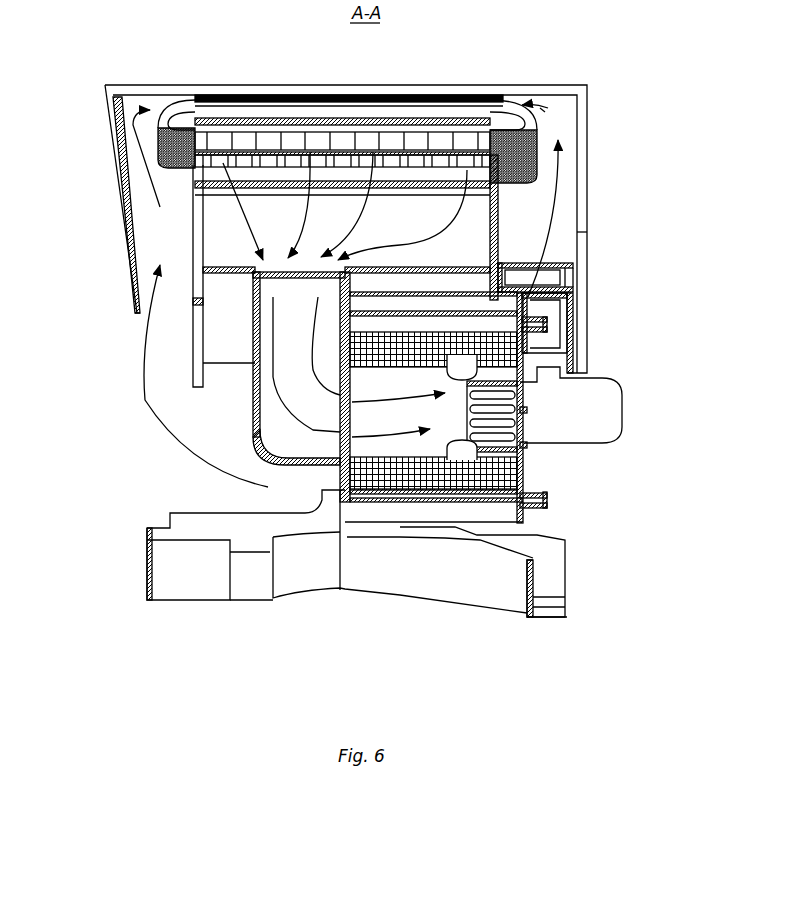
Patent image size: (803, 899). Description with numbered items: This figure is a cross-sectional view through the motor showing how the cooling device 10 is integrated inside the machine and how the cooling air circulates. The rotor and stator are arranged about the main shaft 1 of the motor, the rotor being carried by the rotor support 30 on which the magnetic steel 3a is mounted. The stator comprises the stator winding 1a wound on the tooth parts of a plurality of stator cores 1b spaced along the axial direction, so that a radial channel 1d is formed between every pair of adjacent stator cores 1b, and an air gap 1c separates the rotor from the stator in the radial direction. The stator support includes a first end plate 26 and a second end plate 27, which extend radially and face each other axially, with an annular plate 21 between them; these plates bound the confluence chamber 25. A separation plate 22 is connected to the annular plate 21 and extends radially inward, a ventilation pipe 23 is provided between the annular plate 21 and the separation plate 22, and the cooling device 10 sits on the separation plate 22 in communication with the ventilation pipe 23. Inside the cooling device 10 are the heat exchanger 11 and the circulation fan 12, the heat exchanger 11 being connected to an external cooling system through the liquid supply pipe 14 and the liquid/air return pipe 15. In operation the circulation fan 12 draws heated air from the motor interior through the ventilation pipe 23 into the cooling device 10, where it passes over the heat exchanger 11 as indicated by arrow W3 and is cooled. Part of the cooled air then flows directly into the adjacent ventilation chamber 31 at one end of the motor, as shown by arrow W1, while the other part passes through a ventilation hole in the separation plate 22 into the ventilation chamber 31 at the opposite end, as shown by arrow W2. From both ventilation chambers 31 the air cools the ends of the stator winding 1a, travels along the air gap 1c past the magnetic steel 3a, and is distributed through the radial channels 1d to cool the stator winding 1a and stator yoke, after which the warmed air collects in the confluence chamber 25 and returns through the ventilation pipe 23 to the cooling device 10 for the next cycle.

The main shaft 1 is at (310, 577).
The stator winding 1a is at (410, 117).
The stator cores 1b is at (473, 143).
The air gap 1c is at (262, 165).
The radial channel 1d is at (282, 152).
The magnetic steel 3a is at (210, 96).
The cooling device 10 is at (341, 461).
The heat exchanger 11 is at (522, 482).
The circulation fan 12 is at (587, 397).
The liquid supply pipe 14 is at (547, 503).
The liquid/air return pipe 15 is at (547, 325).
The annular plate 21 is at (524, 300).
The separation plate 22 is at (350, 322).
The ventilation pipe 23 is at (253, 412).
The confluence chamber 25 is at (212, 253).
The first end plate 26 is at (460, 267).
The second end plate 27 is at (200, 225).
The rotor support 30 is at (177, 83).
The ventilation chambers 31 is at (135, 182).
The arrow W1 is at (548, 200).
The arrow W2 is at (200, 298).
The arrow W3 is at (372, 362).